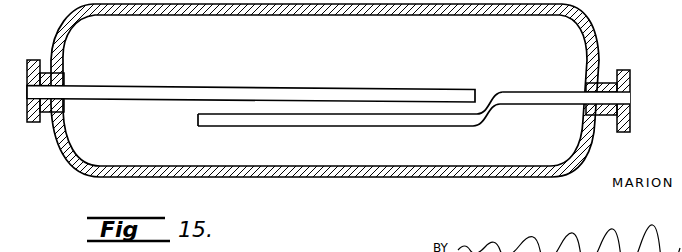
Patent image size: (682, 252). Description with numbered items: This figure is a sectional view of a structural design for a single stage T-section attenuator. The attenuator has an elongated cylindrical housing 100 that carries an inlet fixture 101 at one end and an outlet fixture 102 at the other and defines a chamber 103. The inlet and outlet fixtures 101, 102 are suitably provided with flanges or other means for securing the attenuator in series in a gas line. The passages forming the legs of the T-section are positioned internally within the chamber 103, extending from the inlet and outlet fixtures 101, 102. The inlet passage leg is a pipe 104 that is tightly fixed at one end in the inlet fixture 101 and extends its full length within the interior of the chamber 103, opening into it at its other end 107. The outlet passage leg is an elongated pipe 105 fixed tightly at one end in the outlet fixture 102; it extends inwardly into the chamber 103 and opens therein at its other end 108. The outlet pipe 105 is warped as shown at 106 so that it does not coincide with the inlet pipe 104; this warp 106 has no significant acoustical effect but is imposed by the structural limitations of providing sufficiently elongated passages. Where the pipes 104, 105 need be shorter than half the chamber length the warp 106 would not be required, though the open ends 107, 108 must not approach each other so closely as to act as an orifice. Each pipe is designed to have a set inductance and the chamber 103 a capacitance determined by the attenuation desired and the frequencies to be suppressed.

The cylindrical housing 100 is at (148, 176).
The inlet fixture 101 is at (29, 122).
The outlet fixture 102 is at (634, 113).
The chamber 103 is at (333, 67).
The inlet pipe 104 is at (165, 86).
The outlet pipe 105 is at (387, 128).
The warp 106 is at (494, 118).
The open end of inlet pipe 107 is at (487, 91).
The open end of outlet pipe 108 is at (198, 125).